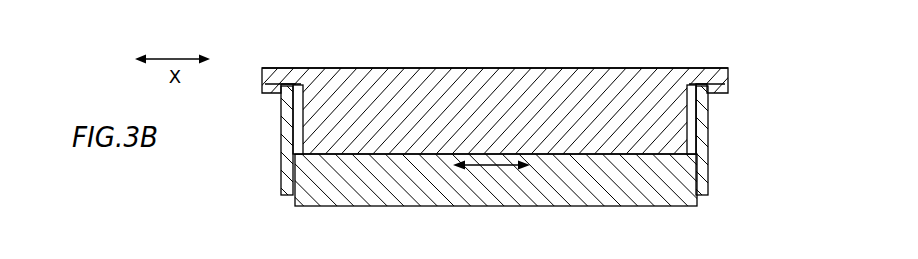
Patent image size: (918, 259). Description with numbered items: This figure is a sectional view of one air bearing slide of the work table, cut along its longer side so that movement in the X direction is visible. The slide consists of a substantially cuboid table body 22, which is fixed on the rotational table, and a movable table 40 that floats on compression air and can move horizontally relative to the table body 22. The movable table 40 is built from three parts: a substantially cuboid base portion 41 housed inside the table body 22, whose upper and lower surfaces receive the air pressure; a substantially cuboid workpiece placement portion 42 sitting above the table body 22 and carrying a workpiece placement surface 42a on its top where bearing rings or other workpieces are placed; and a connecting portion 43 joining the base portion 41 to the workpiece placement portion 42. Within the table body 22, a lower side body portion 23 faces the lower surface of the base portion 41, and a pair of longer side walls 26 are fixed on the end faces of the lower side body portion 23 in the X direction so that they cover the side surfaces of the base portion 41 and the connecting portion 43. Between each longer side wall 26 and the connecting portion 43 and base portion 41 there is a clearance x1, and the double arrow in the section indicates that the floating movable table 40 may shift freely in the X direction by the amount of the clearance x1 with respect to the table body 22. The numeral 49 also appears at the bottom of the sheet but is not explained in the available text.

The movable table 40 is at (493, 80).
The workpiece placement portion 42 is at (493, 95).
The workpiece placement surface 42a is at (414, 68).
The connecting portion 43 is at (575, 110).
The base portion 41 is at (658, 80).
The table body 22 is at (496, 163).
The lower side body portion 23 is at (642, 200).
The longer side wall 26 is at (282, 147).
The clearance in X direction x1 is at (281, 122).
The cooling member 49 is at (578, 254).